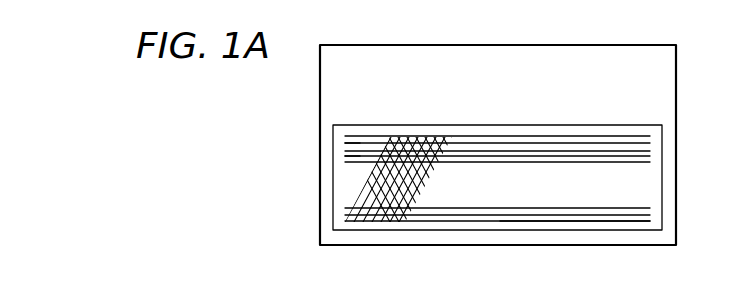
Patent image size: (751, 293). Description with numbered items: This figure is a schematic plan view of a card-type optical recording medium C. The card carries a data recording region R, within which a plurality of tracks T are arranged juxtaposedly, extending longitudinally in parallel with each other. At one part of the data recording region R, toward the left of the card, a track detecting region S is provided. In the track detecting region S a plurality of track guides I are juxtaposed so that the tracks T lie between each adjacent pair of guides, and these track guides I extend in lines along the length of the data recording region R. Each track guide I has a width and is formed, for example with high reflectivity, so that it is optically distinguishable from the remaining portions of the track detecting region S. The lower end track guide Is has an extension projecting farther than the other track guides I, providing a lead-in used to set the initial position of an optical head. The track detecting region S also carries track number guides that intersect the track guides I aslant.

The card-type optical recording medium C is at (676, 77).
The track detecting region S is at (457, 120).
The tracks T is at (343, 147).
The track guide I is at (633, 138).
The data recording region R is at (532, 230).
The lower end track guide Is is at (646, 215).